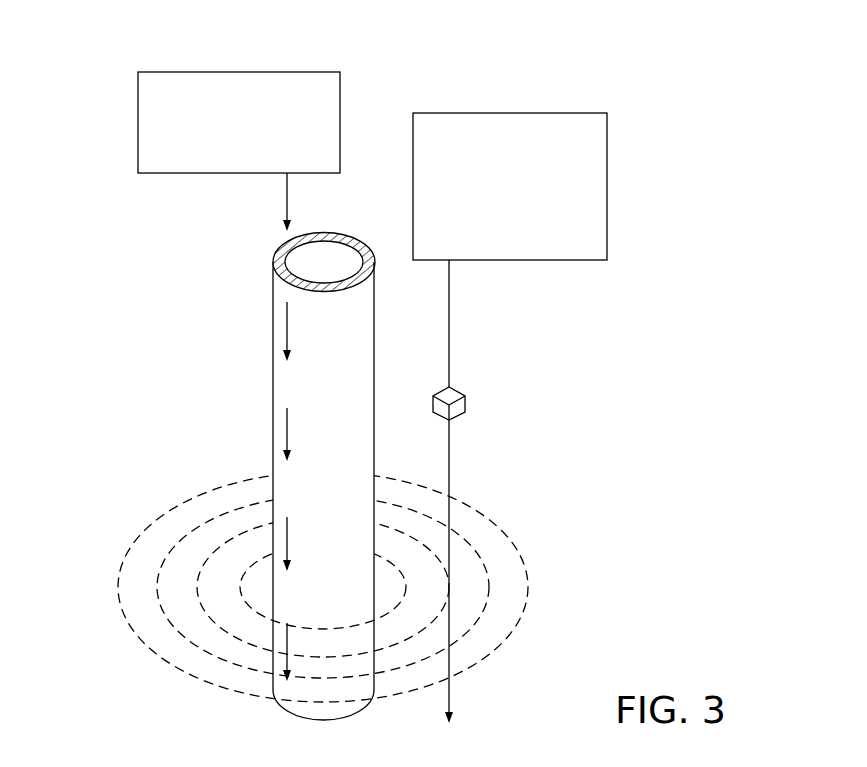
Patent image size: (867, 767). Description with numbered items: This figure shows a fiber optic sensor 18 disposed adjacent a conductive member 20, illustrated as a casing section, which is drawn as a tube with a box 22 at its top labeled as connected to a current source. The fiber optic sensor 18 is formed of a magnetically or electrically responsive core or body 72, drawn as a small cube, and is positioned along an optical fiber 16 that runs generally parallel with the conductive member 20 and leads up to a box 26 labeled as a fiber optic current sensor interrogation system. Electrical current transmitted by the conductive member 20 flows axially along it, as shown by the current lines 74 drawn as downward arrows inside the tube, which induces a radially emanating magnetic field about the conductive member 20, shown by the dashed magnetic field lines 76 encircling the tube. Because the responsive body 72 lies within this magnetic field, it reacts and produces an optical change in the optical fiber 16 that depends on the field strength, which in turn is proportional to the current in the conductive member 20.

The optical fiber 16 is at (449, 303).
The fiber optic sensor 18 is at (507, 380).
The conductive member 20 is at (266, 413).
The current source connection 22 is at (188, 72).
The fiber optic current sensor interrogation system 26 is at (565, 113).
The responsive core 72 is at (466, 404).
The current lines 74 is at (284, 327).
The magnetic field lines 76 is at (140, 638).